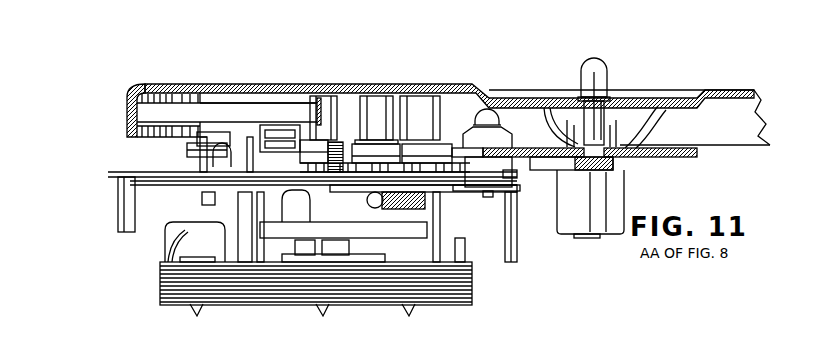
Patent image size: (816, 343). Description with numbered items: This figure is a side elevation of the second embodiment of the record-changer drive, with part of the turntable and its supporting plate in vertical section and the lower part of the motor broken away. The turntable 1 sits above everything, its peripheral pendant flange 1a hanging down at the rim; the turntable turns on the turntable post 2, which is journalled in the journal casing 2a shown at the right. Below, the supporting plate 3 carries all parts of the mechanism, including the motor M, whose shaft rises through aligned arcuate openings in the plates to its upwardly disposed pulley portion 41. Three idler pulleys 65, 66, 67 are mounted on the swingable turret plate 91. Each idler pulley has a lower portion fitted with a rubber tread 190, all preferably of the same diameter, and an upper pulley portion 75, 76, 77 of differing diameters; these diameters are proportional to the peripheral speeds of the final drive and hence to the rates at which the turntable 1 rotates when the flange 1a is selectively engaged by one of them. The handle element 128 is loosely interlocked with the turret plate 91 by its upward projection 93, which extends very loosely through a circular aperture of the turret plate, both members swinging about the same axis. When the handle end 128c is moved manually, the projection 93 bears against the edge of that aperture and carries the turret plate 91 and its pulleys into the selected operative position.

The turntable 1 is at (215, 86).
The peripheral pendant flange 1a is at (128, 120).
The turntable post 2 is at (605, 63).
The journal casing 2a is at (603, 220).
The supporting plate 3 is at (158, 172).
The upwardly disposed pulley portion 41 is at (326, 156).
The idler pulley 65 is at (322, 100).
The idler pulley 66 is at (379, 100).
The idler pulley 67 is at (432, 97).
The upper pulley portion 75 is at (329, 143).
The upper pulley portion 76 is at (390, 133).
The upper pulley portion 77 is at (436, 117).
The turret plate 91 is at (246, 172).
The upward projection 93 is at (290, 164).
The handle element 128 is at (198, 174).
The handle end 128c is at (118, 211).
The rubber treads 190 is at (298, 162).
The motor M is at (344, 292).